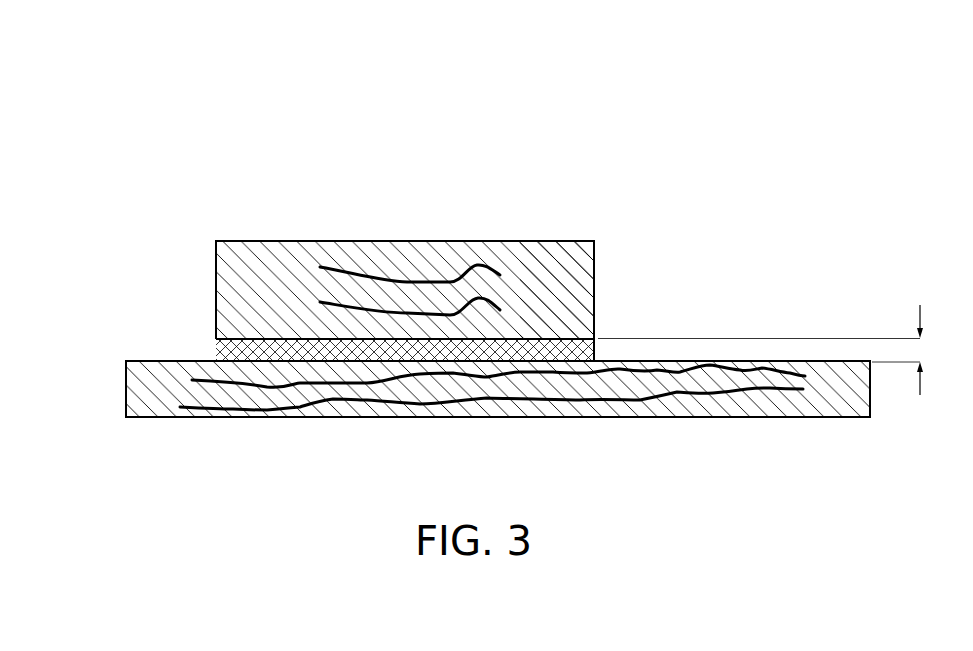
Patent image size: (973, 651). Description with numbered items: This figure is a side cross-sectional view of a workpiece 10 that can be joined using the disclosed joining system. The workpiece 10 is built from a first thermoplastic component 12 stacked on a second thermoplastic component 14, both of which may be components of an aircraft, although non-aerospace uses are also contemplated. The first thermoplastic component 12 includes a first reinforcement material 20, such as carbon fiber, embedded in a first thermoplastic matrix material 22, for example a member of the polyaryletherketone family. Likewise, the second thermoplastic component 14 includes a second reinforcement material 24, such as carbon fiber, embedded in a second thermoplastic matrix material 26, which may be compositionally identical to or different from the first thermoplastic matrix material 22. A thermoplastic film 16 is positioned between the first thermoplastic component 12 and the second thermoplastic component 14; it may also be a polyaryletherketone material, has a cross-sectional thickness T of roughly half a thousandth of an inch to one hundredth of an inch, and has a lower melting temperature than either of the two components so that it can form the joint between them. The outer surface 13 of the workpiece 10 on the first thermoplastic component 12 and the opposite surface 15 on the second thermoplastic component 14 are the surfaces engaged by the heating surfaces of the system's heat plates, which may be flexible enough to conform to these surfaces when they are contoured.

The workpiece 10 is at (770, 146).
The first thermoplastic component 12 is at (215, 290).
The surface 13 is at (258, 240).
The second thermoplastic component 14 is at (125, 388).
The surface 15 is at (325, 417).
The thermoplastic film 16 is at (215, 350).
The first reinforcement material 20 is at (352, 303).
The first thermoplastic matrix material 22 is at (547, 253).
The second reinforcement material 24 is at (613, 400).
The second thermoplastic matrix material 26 is at (157, 390).